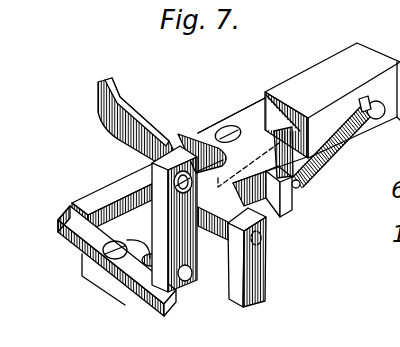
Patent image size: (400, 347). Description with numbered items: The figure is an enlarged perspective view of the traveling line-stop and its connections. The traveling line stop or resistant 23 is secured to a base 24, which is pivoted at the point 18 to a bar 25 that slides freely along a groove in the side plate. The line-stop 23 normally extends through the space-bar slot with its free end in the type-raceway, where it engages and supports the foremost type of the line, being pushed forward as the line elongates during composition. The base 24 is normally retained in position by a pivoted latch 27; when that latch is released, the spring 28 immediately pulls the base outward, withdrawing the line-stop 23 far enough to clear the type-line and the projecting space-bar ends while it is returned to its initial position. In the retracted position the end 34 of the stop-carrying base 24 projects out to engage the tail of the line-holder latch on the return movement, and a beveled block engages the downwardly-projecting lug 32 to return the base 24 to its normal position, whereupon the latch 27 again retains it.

The pivot point 18 is at (224, 128).
The traveling line-stop 23 is at (116, 90).
The base 24 is at (202, 135).
The bar 25 is at (107, 191).
The pivoted latch 27 is at (93, 285).
The spring 28 is at (333, 147).
The downwardly-projecting lug 32 is at (262, 259).
The end of stop-carrying base 34 is at (249, 100).